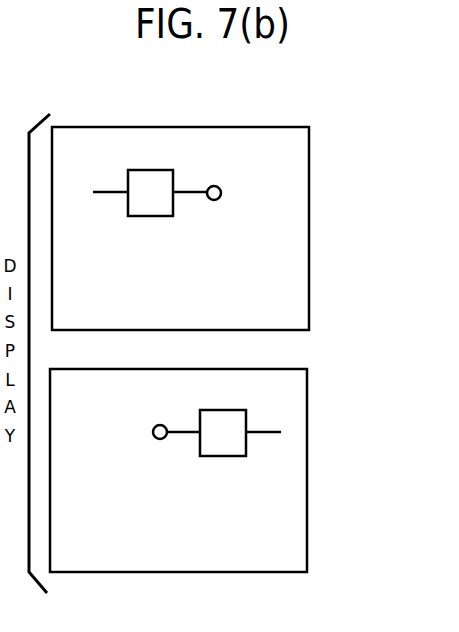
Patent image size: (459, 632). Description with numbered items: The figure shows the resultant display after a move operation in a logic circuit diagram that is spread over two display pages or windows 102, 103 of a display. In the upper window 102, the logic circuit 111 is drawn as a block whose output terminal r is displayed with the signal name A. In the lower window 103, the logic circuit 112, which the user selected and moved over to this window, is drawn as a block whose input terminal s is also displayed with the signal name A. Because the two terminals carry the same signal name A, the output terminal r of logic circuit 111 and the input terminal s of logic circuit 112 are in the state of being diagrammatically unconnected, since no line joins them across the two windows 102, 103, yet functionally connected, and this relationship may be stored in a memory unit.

The window 102 is at (309, 240).
The window 103 is at (309, 437).
The logic circuit 111 is at (157, 189).
The logic circuit 112 is at (217, 441).